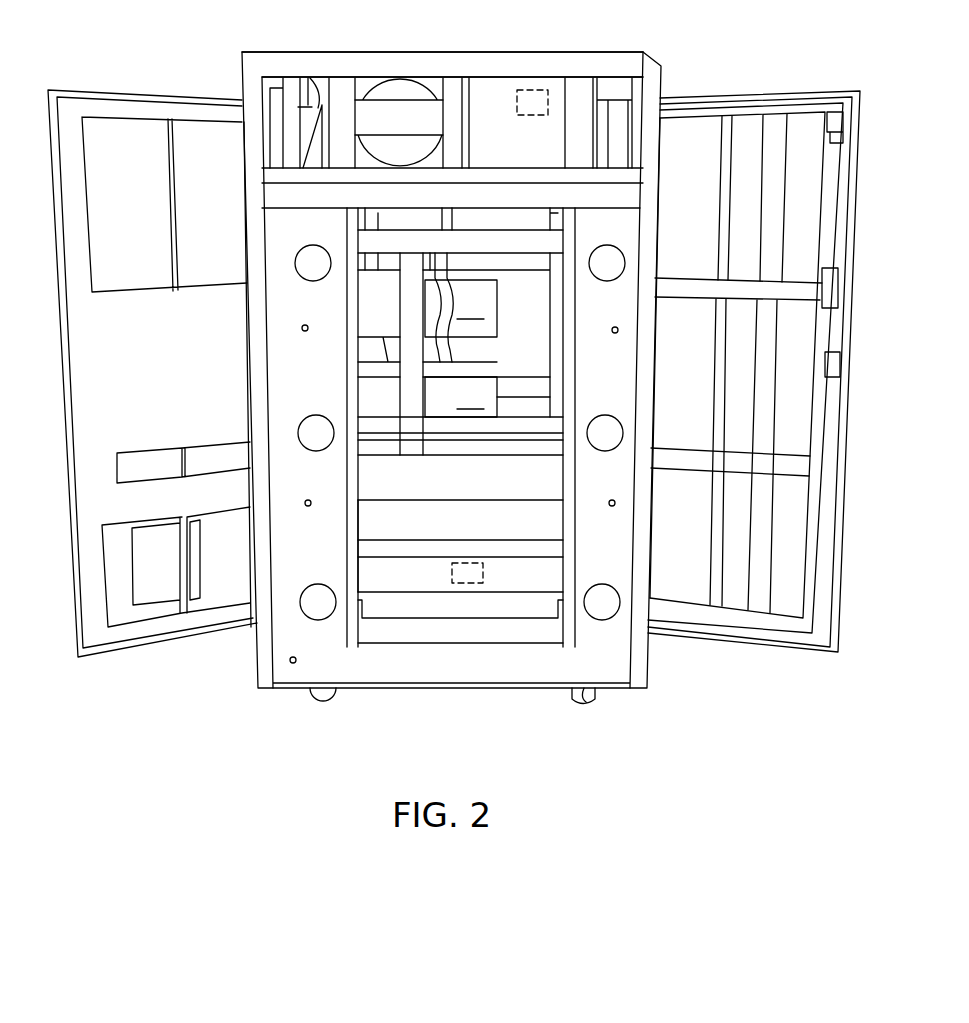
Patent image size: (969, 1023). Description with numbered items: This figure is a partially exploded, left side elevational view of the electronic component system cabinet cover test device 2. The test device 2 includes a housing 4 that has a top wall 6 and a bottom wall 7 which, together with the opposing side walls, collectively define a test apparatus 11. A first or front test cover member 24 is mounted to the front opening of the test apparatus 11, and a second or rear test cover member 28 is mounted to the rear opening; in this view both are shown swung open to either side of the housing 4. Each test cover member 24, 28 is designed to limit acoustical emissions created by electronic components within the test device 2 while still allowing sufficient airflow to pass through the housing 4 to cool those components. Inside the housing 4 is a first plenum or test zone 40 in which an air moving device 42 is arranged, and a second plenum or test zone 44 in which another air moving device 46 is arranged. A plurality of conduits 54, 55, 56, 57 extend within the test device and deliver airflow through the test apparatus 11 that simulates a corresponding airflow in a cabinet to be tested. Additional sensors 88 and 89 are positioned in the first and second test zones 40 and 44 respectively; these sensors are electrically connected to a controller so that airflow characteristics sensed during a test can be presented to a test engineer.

The electronic component system cabinet cover test device 2 is at (476, 432).
The housing 4 is at (476, 391).
The top wall 6 is at (452, 52).
The bottom wall 7 is at (529, 688).
The test apparatus 11 is at (233, 370).
The first or front test cover member 24 is at (866, 339).
The second or rear test cover member 28 is at (139, 373).
The first plenum or test zone 40 is at (608, 123).
The air moving device 42 is at (384, 84).
The second plenum or test zone 44 is at (535, 573).
The air moving device 46 is at (400, 528).
The conduit 54 is at (461, 308).
The conduit 55 is at (489, 276).
The conduit 56 is at (461, 397).
The conduit 57 is at (492, 364).
The sensor 88 is at (530, 88).
The sensor 89 is at (465, 583).